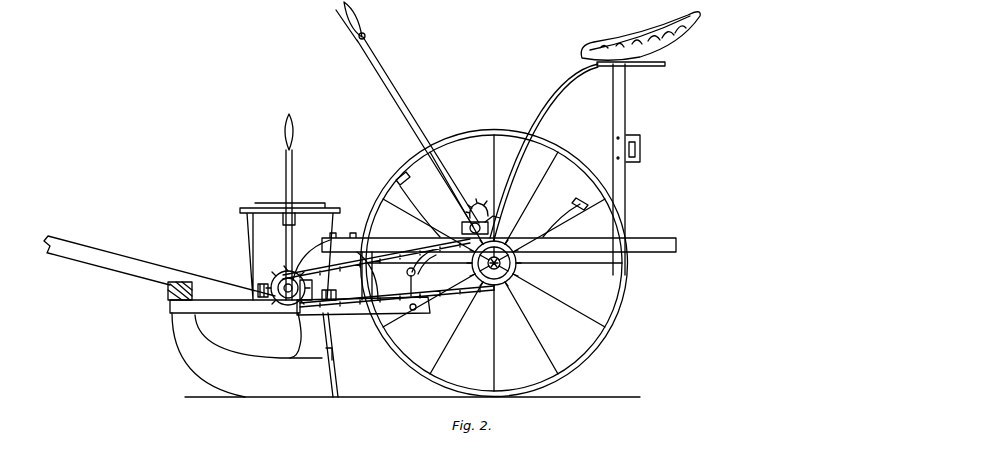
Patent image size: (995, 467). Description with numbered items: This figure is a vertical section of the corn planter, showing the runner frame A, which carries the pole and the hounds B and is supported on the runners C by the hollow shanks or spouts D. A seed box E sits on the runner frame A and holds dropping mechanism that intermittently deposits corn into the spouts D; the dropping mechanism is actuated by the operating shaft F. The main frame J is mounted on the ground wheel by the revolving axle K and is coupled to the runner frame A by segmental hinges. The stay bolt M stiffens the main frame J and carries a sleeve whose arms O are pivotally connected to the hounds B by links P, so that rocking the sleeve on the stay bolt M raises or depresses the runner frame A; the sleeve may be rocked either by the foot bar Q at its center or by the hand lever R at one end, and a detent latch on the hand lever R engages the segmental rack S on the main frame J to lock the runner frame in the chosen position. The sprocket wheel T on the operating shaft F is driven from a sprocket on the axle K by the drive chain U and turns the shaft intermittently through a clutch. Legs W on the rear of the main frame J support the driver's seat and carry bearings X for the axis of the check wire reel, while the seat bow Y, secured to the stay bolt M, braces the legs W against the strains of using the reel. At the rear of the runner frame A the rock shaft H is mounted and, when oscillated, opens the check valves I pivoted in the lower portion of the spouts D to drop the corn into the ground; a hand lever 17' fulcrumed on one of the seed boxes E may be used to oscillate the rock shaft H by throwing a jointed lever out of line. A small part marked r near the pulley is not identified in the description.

The hand lever 17' is at (305, 207).
The hand lever R is at (410, 100).
The seat bow Y is at (537, 100).
The bearings X is at (640, 150).
The legs W is at (625, 194).
The main frame J is at (655, 252).
The seed boxes E is at (290, 251).
The foot bar Q is at (420, 210).
The segmental rack S is at (477, 200).
The stay bolt M is at (494, 218).
The revolving axle K is at (500, 261).
The arms O is at (420, 262).
The links P is at (412, 284).
The drive chain U is at (372, 262).
The rock shaft H is at (334, 292).
The sprocket wheel T is at (307, 286).
The hounds B is at (356, 313).
The runner frame A is at (272, 313).
The operating shaft F is at (288, 292).
The hollow shanks or spouts D is at (302, 335).
The check valves I is at (333, 355).
The runners C is at (247, 355).
The bracket r is at (263, 282).